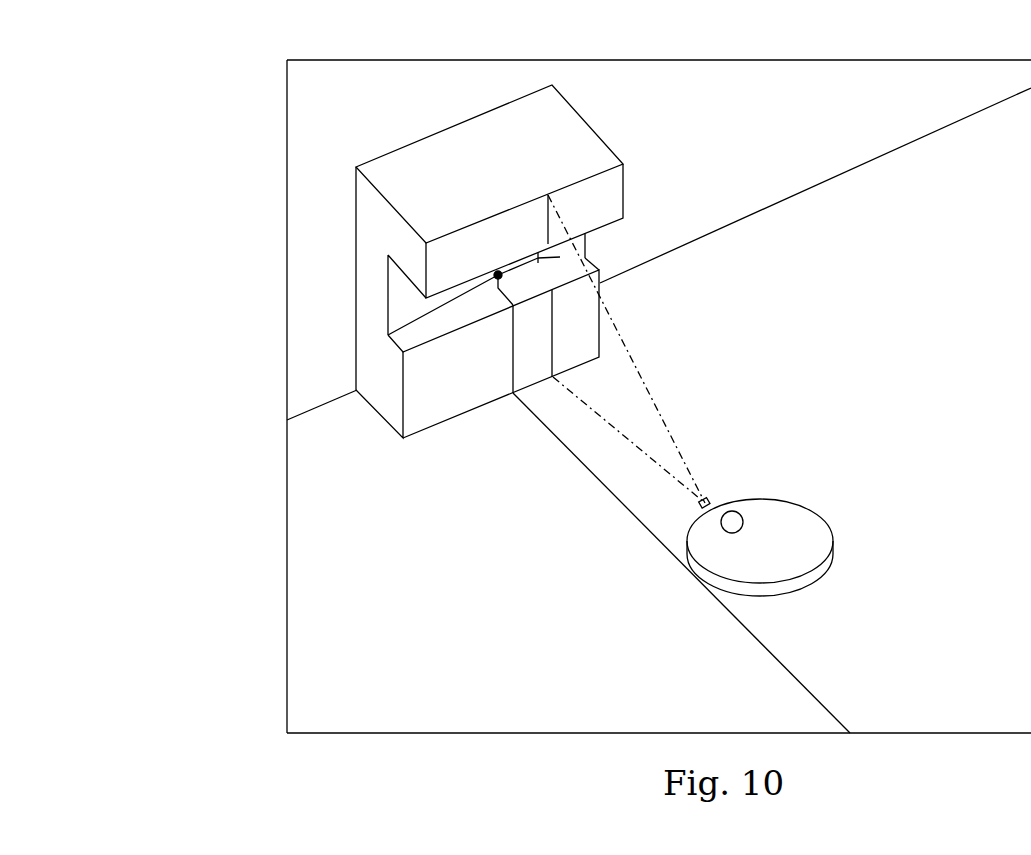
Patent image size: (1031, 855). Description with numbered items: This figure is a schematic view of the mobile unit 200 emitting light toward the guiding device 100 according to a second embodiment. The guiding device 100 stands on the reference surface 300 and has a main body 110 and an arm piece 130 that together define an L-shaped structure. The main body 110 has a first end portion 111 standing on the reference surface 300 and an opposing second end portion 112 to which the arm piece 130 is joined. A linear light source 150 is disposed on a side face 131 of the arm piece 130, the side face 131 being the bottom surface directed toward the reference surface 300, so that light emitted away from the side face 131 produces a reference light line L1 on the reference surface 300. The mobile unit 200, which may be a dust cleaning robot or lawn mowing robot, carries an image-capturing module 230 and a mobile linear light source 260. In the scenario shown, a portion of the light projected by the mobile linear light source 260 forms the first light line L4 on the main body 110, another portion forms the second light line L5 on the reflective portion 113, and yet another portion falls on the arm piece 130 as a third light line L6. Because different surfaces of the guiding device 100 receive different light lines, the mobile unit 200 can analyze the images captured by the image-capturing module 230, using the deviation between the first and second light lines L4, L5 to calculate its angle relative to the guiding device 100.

The guiding device 100 is at (474, 258).
The main body 110 is at (412, 233).
The first end portion 111 is at (370, 375).
The second end portion 112 is at (395, 200).
The reflective portion 113 is at (415, 338).
The arm piece 130 is at (475, 155).
The side face 131 is at (410, 283).
The linear light source 150 is at (496, 279).
The mobile unit 200 is at (764, 525).
The image-capturing module 230 is at (728, 511).
The mobile linear light source 260 is at (703, 506).
The reference surface 300 is at (333, 696).
The reference light line L1 is at (755, 638).
The first light line L4 is at (560, 257).
The second light line L5 is at (555, 320).
The third light line L6 is at (553, 235).